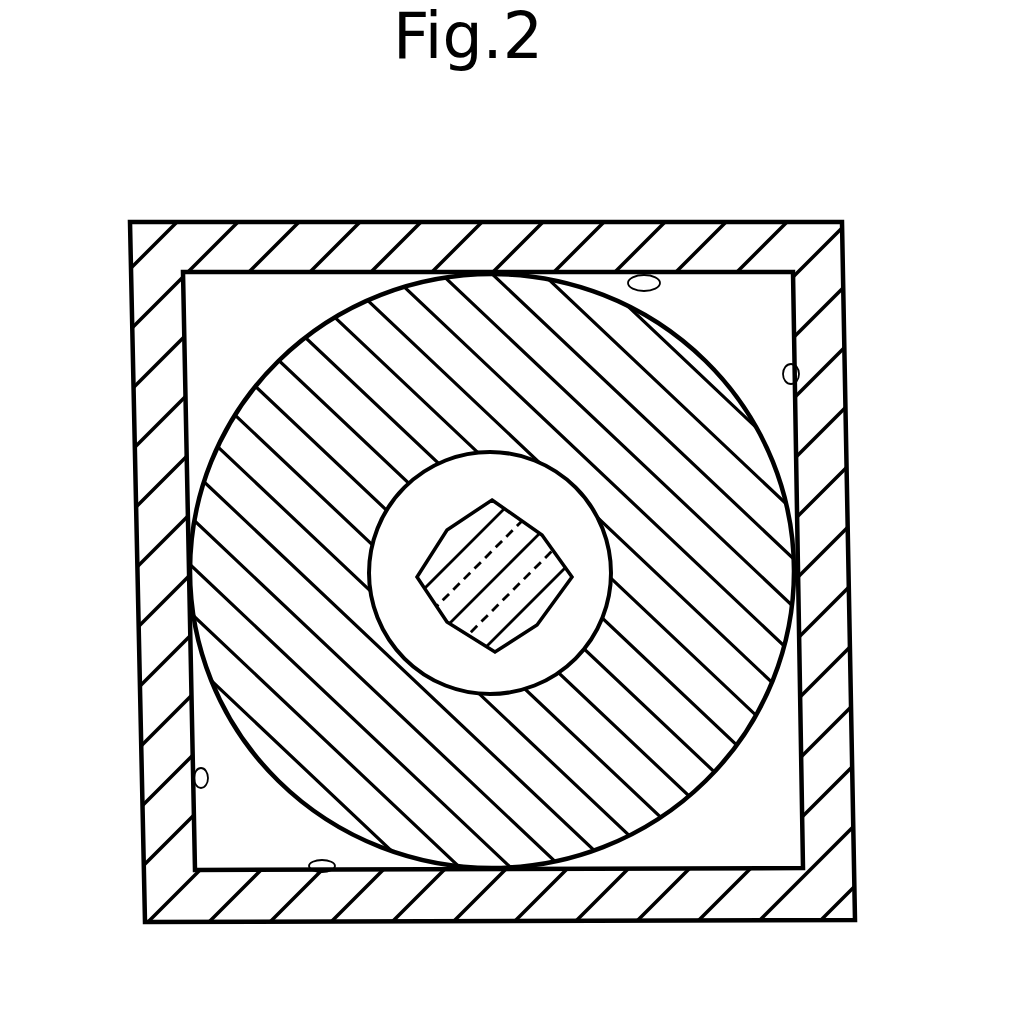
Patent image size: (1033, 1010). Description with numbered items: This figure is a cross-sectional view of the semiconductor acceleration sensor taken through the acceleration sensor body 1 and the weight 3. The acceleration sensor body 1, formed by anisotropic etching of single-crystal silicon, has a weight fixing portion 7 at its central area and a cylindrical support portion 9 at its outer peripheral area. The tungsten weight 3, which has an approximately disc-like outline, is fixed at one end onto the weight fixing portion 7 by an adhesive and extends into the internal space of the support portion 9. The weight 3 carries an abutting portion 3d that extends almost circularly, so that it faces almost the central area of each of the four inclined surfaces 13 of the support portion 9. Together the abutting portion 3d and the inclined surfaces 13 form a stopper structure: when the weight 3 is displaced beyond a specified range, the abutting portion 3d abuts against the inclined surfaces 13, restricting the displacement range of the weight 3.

The acceleration sensor body 1 is at (140, 353).
The weight 3 is at (428, 807).
The abutting portion 3d is at (790, 497).
The weight fixing portion 7 is at (503, 607).
The support portion 9 is at (813, 464).
The inclined surfaces 13 is at (658, 277).